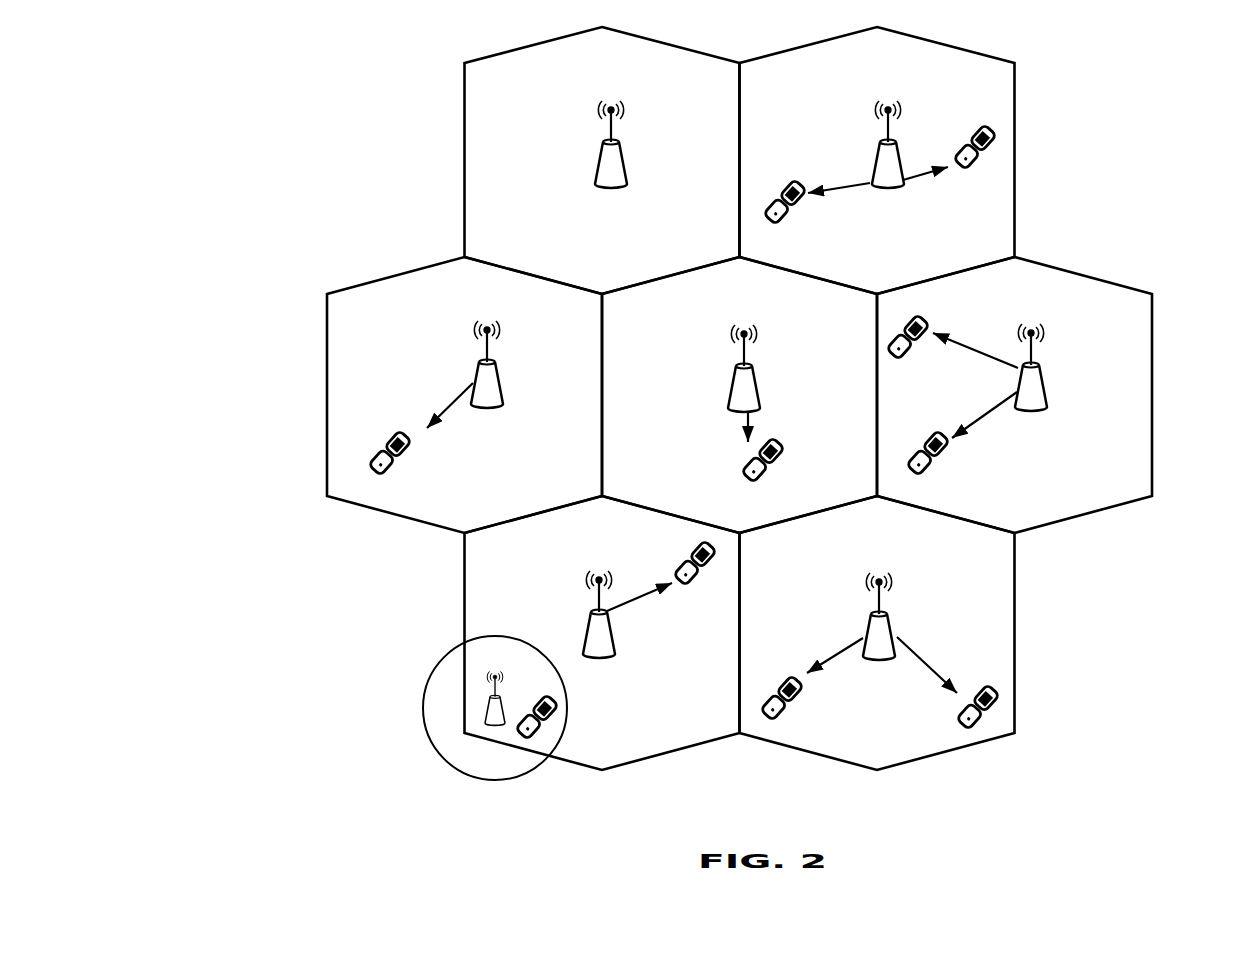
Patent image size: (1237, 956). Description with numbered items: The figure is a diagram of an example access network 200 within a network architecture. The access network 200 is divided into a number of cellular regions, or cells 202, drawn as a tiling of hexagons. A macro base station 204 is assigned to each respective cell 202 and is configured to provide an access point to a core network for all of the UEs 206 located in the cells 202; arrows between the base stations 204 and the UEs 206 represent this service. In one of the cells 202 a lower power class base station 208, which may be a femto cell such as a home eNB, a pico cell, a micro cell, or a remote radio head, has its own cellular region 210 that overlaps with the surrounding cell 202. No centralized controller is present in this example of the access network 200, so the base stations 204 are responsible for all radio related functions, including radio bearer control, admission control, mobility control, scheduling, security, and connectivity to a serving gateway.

The access network 200 is at (226, 111).
The cellular region (cell) 202 is at (463, 116).
The macro base station 204 is at (606, 95).
The UE 206 is at (988, 130).
The lower power class base station 208 is at (493, 668).
The cellular region of lower power class base station 210 is at (437, 712).